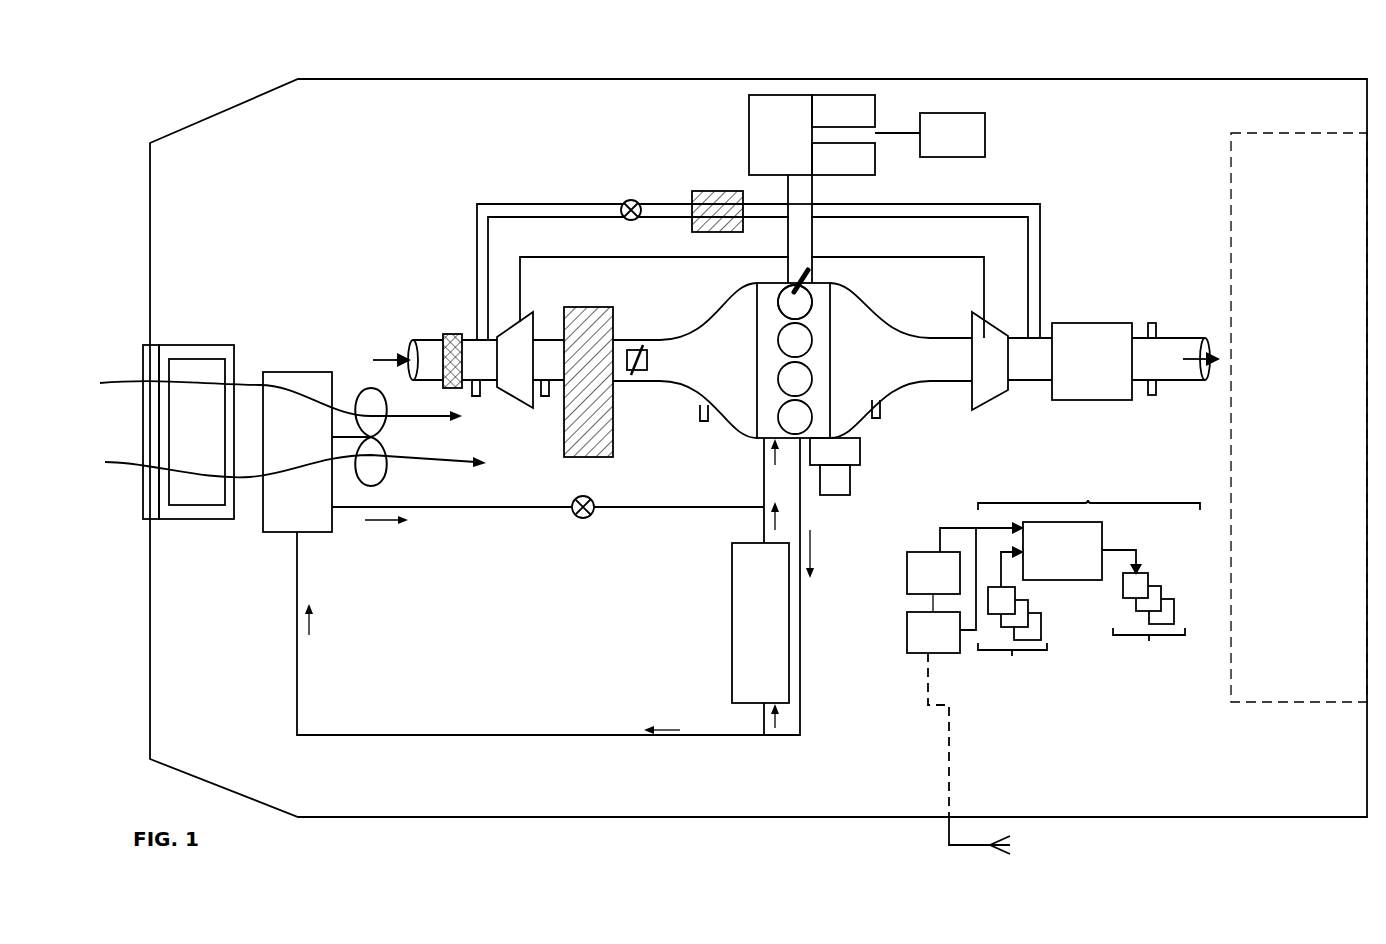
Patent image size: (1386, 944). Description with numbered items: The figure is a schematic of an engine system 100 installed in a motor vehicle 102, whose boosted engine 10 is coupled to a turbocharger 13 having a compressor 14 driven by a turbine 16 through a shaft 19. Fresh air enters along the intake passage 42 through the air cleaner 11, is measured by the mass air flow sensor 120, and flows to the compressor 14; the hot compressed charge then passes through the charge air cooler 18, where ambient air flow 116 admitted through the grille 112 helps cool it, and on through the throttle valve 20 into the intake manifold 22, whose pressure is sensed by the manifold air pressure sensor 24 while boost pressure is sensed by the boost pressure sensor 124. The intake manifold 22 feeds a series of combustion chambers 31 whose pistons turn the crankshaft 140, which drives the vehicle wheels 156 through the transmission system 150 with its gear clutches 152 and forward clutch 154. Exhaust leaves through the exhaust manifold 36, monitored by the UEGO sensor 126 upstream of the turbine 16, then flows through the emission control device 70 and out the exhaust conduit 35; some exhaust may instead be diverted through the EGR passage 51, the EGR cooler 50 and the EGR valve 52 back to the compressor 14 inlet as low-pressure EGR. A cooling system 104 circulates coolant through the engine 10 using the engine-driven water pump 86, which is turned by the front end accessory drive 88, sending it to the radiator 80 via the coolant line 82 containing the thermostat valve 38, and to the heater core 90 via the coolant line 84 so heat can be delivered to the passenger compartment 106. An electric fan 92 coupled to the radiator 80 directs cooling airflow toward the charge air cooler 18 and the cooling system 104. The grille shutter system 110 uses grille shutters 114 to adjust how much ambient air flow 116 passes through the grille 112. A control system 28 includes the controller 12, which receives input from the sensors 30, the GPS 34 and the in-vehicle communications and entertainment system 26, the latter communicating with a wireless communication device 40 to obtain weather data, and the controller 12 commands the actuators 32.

The engine system 100 is at (1122, 156).
The motor vehicle 102 is at (740, 78).
The passenger compartment 106 is at (1299, 417).
The engine 10 is at (830, 350).
The air cleaner 11 is at (455, 333).
The controller 12 is at (1062, 551).
The turbocharger 13 is at (571, 289).
The compressor 14 is at (530, 360).
The turbine 16 is at (990, 361).
The charge air cooler 18 is at (590, 307).
The shaft 19 is at (913, 258).
The throttle valve 20 is at (656, 354).
The intake manifold 22 is at (685, 360).
The manifold air pressure sensor 24 is at (700, 405).
The in-vehicle communications and entertainment system 26 is at (941, 590).
The control system 28 is at (1089, 482).
The sensors 30 is at (1012, 621).
The combustion chambers 31 is at (812, 298).
The actuators 32 is at (1148, 615).
The GPS 34 is at (965, 567).
The exhaust conduit 35 is at (1190, 338).
The exhaust manifold 36 is at (901, 360).
The thermostat valve 38 is at (586, 518).
The wireless communication device 40 is at (1012, 856).
The intake passage 42 is at (433, 392).
The EGR cooler 50 is at (706, 191).
The EGR passage 51 is at (823, 204).
The EGR valve 52 is at (641, 205).
The emission control device 70 is at (1091, 310).
The radiator 80 is at (317, 452).
The coolant line 82 is at (672, 510).
The coolant line 84 is at (764, 516).
The engine-driven water pump 86 is at (850, 487).
The front end accessory drive 88 is at (861, 448).
The heater core 90 is at (760, 623).
The electric fan 92 is at (383, 478).
The cooling system 104 is at (840, 660).
The grille shutter system 110 is at (190, 520).
The grille 112 is at (143, 505).
The grille shutters 114 is at (197, 432).
The ambient air flow 116 is at (100, 383).
The mass air flow sensor 120 is at (479, 398).
The boost pressure sensor 124 is at (548, 398).
The UEGO sensor 126 is at (880, 405).
The crankshaft 140 is at (815, 232).
The transmission system 150 is at (780, 135).
The gear clutches 152 is at (843, 111).
The forward clutch 154 is at (843, 159).
The vehicle wheels 156 is at (930, 135).